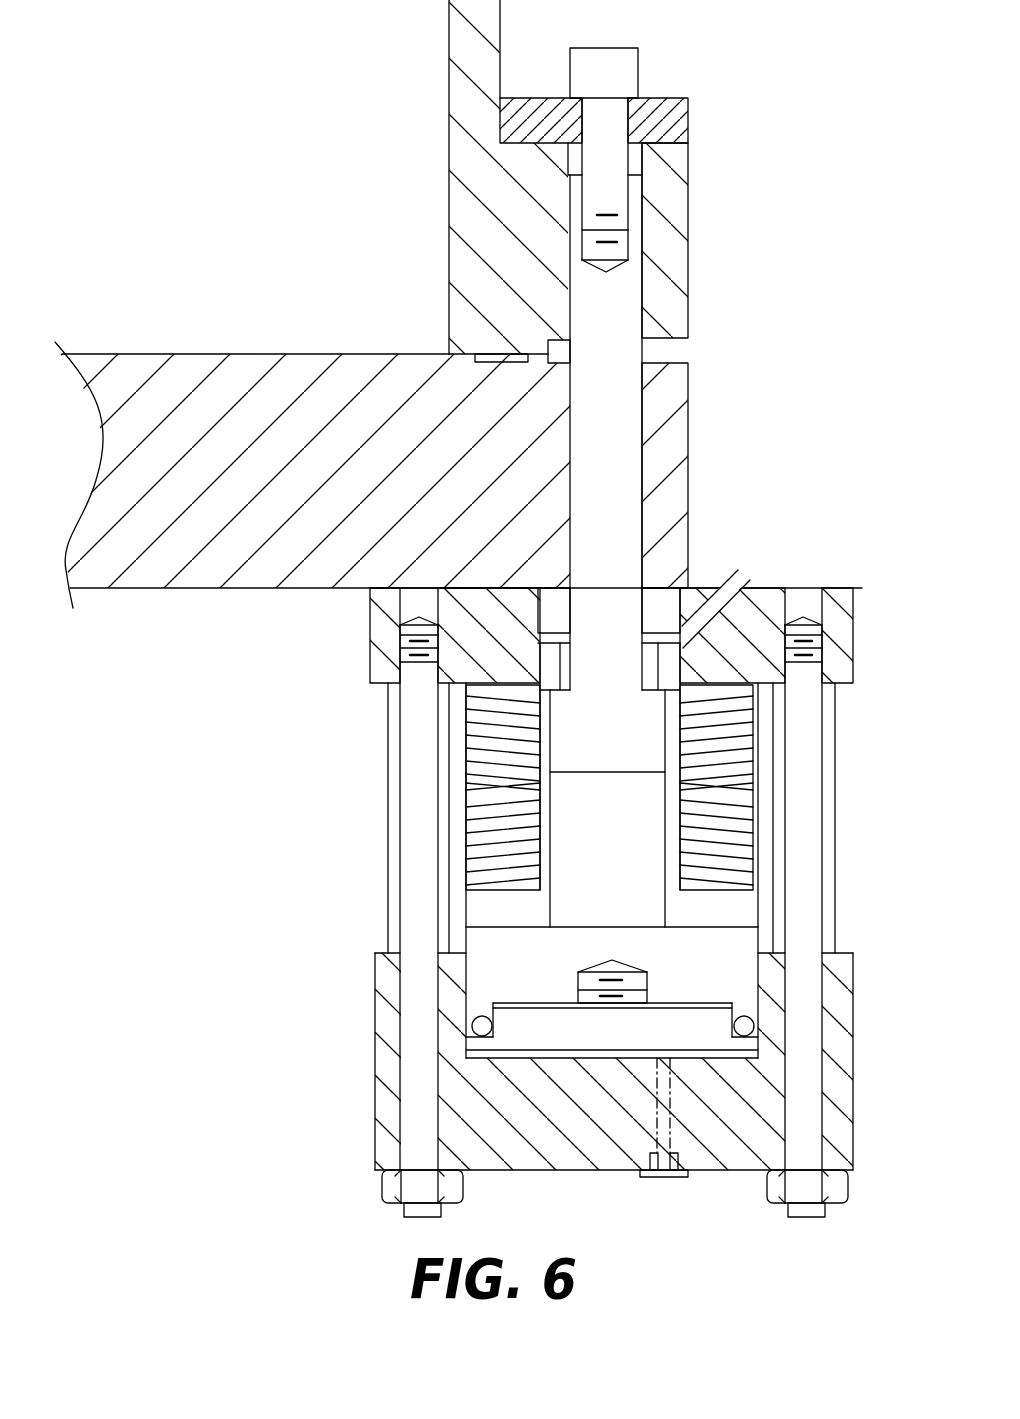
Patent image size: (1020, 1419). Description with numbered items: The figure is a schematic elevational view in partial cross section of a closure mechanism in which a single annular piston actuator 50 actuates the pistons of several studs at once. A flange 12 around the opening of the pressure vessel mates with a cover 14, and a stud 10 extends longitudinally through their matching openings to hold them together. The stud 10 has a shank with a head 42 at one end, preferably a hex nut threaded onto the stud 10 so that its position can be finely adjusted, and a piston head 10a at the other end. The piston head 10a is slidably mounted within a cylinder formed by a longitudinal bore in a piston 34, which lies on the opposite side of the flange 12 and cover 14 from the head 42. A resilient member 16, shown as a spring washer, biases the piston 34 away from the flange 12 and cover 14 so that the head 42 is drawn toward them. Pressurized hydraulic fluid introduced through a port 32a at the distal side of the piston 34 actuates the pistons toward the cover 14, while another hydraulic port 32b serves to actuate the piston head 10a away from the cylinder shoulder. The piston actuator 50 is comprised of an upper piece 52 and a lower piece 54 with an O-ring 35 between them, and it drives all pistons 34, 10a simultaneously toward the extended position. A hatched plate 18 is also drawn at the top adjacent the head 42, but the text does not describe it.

The stud 10 is at (645, 362).
The piston head 10a is at (616, 742).
The flange 12 is at (683, 265).
The cover 14 is at (262, 363).
The resilient member 16 is at (470, 757).
The top cover plate 18 is at (690, 115).
The port 32a is at (659, 1184).
The hydraulic port 32b is at (738, 568).
The piston 34 is at (745, 915).
The O-ring 35 is at (472, 1030).
The head 42 is at (630, 62).
The piston actuator 50 is at (458, 989).
The upper piece 52 is at (745, 985).
The lower piece 54 is at (745, 1045).